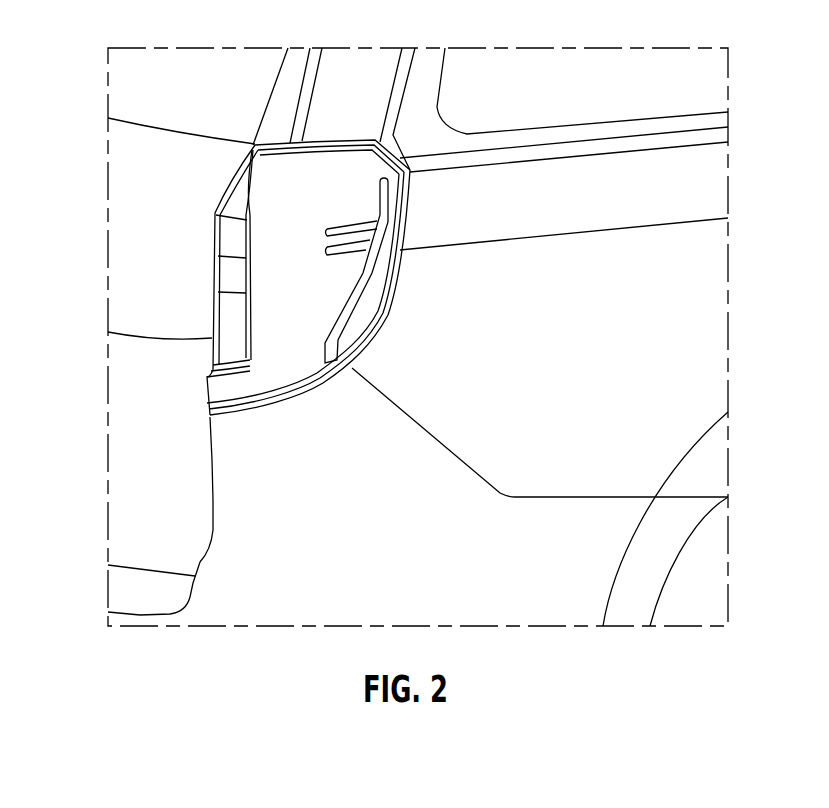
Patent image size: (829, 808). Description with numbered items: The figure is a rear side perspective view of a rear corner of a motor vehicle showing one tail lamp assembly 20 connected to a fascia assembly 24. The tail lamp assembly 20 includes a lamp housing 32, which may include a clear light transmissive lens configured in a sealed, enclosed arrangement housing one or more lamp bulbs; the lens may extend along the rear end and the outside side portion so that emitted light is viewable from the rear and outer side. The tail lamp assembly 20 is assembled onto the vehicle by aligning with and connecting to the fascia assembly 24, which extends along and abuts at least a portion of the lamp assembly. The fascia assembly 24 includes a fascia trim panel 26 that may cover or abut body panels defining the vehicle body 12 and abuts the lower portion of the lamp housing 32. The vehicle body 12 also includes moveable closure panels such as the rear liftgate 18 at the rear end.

The vehicle body 12 is at (650, 313).
The rear liftgate 18 is at (140, 405).
The tail lamp assembly 20 is at (213, 193).
The fascia assembly 24 is at (212, 466).
The fascia trim panel 26 is at (273, 542).
The lamp housing 32 is at (277, 310).